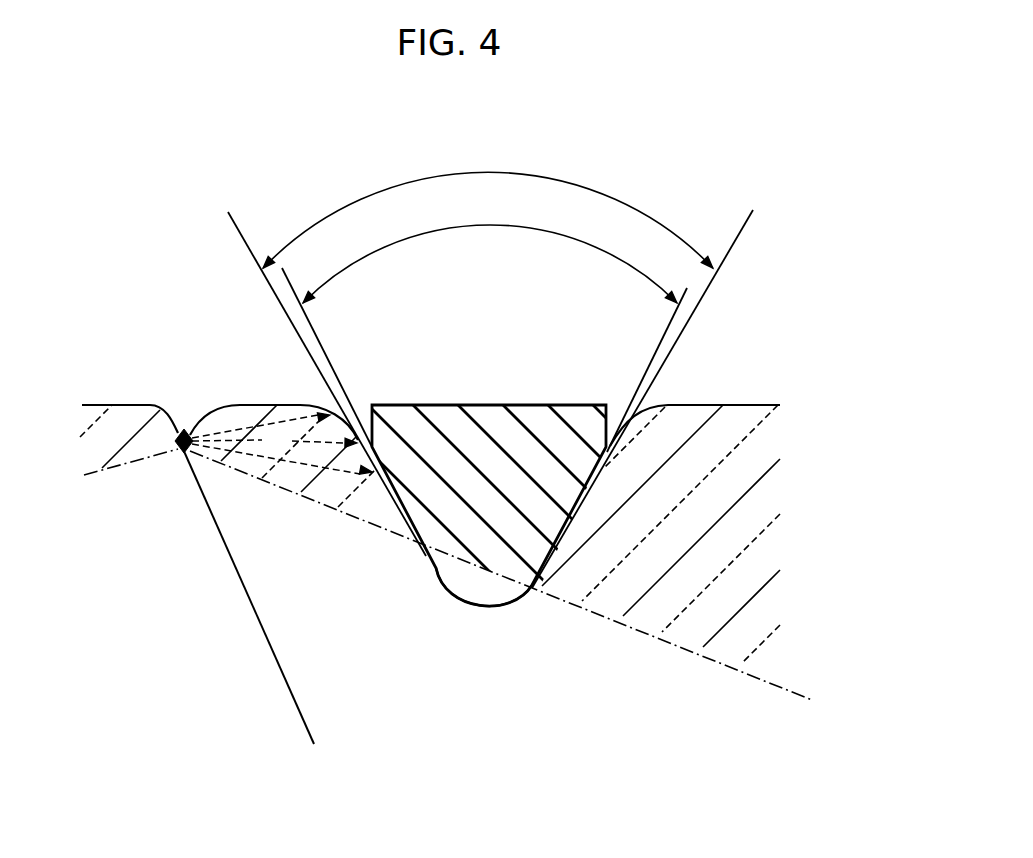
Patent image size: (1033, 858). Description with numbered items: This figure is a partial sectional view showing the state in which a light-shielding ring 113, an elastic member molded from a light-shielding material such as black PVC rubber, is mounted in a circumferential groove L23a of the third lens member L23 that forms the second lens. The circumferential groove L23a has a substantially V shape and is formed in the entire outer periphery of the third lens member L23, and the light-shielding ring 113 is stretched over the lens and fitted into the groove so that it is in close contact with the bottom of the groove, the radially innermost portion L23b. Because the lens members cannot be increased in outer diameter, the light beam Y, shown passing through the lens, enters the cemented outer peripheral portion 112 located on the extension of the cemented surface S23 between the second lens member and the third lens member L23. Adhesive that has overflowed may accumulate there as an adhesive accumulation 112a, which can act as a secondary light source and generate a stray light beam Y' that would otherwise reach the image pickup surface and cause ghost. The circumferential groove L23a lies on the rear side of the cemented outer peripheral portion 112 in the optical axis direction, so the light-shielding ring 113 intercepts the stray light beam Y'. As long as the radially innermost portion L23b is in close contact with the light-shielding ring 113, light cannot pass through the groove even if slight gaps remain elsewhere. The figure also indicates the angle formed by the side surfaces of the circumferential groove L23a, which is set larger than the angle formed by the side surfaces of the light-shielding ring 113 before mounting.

The cemented outer peripheral portion 112 is at (180, 456).
The adhesive accumulation 112a is at (184, 429).
The light-shielding ring 113 is at (497, 405).
The third lens member L23 is at (716, 405).
The circumferential groove L23a is at (356, 438).
The radially innermost portion L23b is at (500, 610).
The cemented surface S23 is at (226, 549).
The light beam Y is at (448, 578).
The stray light beam Y' is at (282, 444).